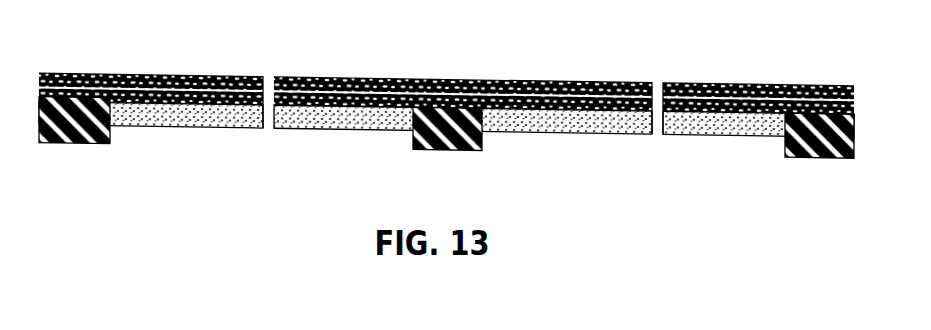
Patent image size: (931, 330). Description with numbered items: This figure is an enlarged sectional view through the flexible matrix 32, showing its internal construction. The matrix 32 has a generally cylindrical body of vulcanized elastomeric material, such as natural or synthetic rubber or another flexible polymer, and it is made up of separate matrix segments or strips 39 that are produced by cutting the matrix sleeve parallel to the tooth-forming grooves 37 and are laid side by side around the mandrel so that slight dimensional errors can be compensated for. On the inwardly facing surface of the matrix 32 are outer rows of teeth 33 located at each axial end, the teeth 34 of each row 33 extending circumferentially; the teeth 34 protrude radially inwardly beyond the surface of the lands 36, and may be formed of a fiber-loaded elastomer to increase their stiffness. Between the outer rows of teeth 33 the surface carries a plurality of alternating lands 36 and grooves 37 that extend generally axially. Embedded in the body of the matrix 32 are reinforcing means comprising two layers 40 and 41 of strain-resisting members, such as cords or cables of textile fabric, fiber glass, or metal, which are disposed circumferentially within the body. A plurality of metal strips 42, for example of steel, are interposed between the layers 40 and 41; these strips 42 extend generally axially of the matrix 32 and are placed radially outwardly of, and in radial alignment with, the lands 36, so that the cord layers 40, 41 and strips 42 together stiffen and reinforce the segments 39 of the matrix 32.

The matrix 32 is at (124, 65).
The outer row of teeth 33 is at (72, 143).
The teeth 34 is at (98, 141).
The lands 36 is at (275, 121).
The grooves 37 is at (318, 121).
The matrix segments 39 is at (492, 78).
The layer of strain-resisting members 40 is at (265, 90).
The layer of strain-resisting members 41 is at (197, 77).
The metal strips 42 is at (655, 90).